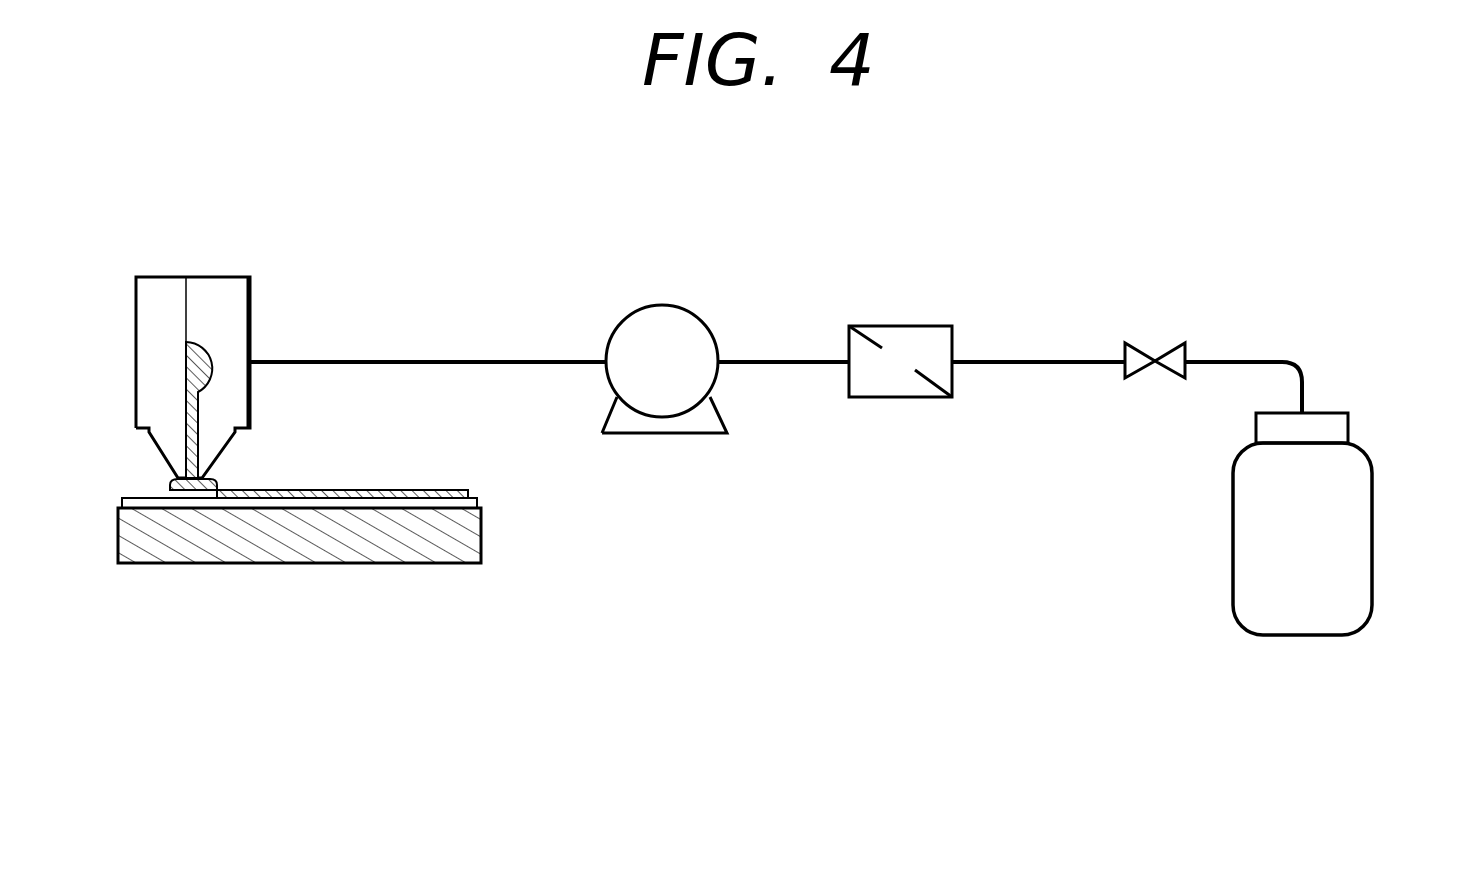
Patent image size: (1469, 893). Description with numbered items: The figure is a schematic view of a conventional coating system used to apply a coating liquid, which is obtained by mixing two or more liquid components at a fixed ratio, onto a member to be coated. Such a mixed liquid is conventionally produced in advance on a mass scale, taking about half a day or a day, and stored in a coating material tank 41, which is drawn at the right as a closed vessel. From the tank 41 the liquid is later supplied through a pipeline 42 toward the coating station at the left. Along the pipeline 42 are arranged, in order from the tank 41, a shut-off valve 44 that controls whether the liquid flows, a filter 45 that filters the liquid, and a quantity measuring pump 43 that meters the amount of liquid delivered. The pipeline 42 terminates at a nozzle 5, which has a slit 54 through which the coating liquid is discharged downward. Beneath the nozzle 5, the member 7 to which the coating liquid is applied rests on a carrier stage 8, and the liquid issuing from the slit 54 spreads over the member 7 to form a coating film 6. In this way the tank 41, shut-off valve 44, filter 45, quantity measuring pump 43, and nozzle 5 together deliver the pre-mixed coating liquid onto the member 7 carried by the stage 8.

The nozzle 5 is at (197, 290).
The slit 54 is at (198, 418).
The coating film 6 is at (352, 492).
The member to be coated 7 is at (478, 500).
The carrier stage 8 is at (472, 541).
The coating material tank 41 is at (1372, 511).
The pipeline 42 is at (1262, 360).
The quantity measuring pump 43 is at (686, 323).
The shut-off valve 44 is at (1162, 375).
The filter 45 is at (927, 326).